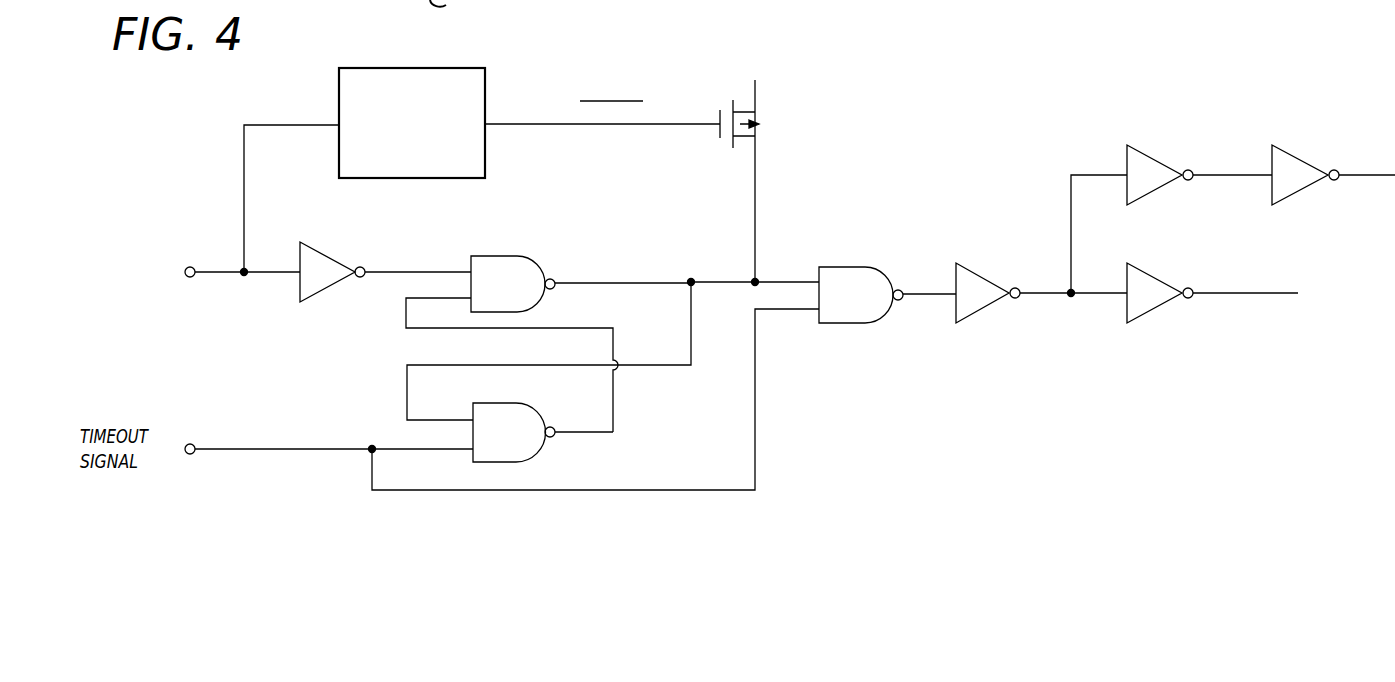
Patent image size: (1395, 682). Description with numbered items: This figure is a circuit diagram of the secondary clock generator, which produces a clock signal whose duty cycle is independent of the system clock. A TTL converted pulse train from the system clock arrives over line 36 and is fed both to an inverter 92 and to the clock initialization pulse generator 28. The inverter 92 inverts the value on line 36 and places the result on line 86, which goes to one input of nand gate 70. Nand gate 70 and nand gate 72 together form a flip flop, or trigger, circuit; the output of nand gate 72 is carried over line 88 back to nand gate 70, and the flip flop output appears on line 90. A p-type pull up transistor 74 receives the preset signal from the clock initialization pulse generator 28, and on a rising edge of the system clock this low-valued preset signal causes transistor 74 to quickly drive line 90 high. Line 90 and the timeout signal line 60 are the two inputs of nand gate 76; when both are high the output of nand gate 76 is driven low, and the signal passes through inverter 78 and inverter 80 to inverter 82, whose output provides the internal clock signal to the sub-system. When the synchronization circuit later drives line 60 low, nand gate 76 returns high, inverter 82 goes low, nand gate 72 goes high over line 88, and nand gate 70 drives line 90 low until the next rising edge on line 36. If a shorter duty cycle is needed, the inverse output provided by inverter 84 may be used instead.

The clock initialization pulse generator 28 is at (485, 148).
The line 36 is at (218, 270).
The line 60 is at (755, 404).
The nand gate 70 is at (504, 256).
The nand gate 72 is at (536, 452).
The pull up transistor 74 is at (733, 108).
The nand gate 76 is at (848, 323).
The inverter 78 is at (982, 316).
The inverter 80 is at (1157, 158).
The inverter 82 is at (1301, 158).
The inverter 84 is at (1157, 316).
The line 86 is at (461, 256).
The line 88 is at (613, 412).
The line 90 is at (755, 266).
The inverter 92 is at (314, 246).